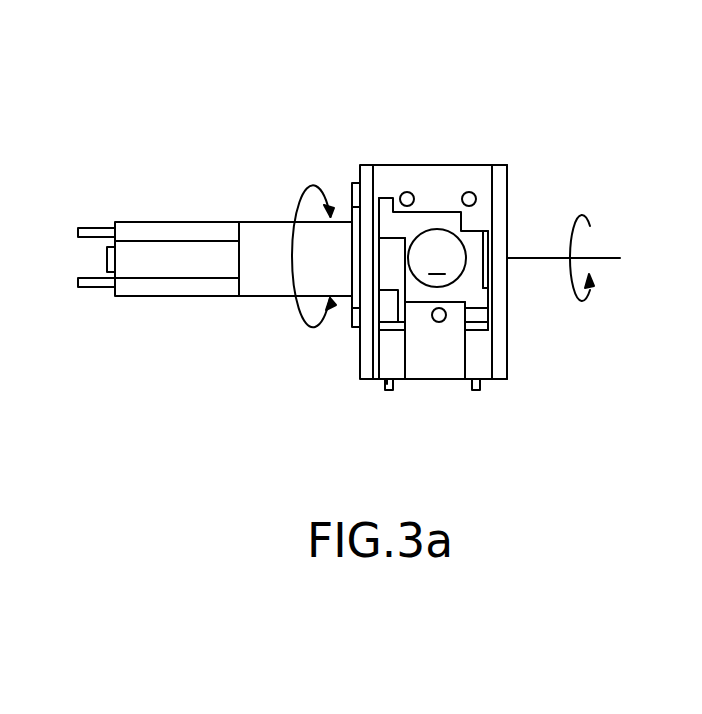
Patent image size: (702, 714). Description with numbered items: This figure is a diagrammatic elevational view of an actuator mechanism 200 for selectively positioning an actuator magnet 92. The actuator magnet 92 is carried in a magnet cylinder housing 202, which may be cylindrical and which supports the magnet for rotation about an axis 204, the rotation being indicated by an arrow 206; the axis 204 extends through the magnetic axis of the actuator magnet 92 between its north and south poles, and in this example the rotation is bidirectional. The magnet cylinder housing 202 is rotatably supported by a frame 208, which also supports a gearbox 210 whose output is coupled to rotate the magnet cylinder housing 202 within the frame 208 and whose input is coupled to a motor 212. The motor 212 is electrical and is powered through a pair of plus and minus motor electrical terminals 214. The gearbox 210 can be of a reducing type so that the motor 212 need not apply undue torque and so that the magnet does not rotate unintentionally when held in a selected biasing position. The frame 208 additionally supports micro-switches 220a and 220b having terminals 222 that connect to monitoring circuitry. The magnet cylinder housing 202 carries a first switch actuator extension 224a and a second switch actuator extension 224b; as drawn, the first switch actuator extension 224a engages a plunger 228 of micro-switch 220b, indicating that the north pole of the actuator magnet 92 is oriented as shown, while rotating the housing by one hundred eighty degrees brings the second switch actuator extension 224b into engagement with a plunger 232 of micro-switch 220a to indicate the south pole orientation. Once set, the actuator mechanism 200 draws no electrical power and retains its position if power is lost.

The actuator mechanism 200 is at (347, 118).
The magnet cylinder housing 202 is at (440, 211).
The axis 204 is at (548, 258).
The arrow 206 is at (293, 306).
The frame 208 is at (508, 195).
The gearbox 210 is at (272, 221).
The motor 212 is at (170, 222).
The motor electrical terminals 214 is at (50, 335).
The micro-switch 220a is at (405, 361).
The micro-switch 220b is at (463, 351).
The terminals 222 is at (387, 391).
The first switch actuator extension 224a is at (484, 297).
The second switch actuator extension 224b is at (386, 198).
The plunger 228 is at (484, 319).
The plunger 232 is at (385, 313).
The actuator magnet 92 is at (462, 272).